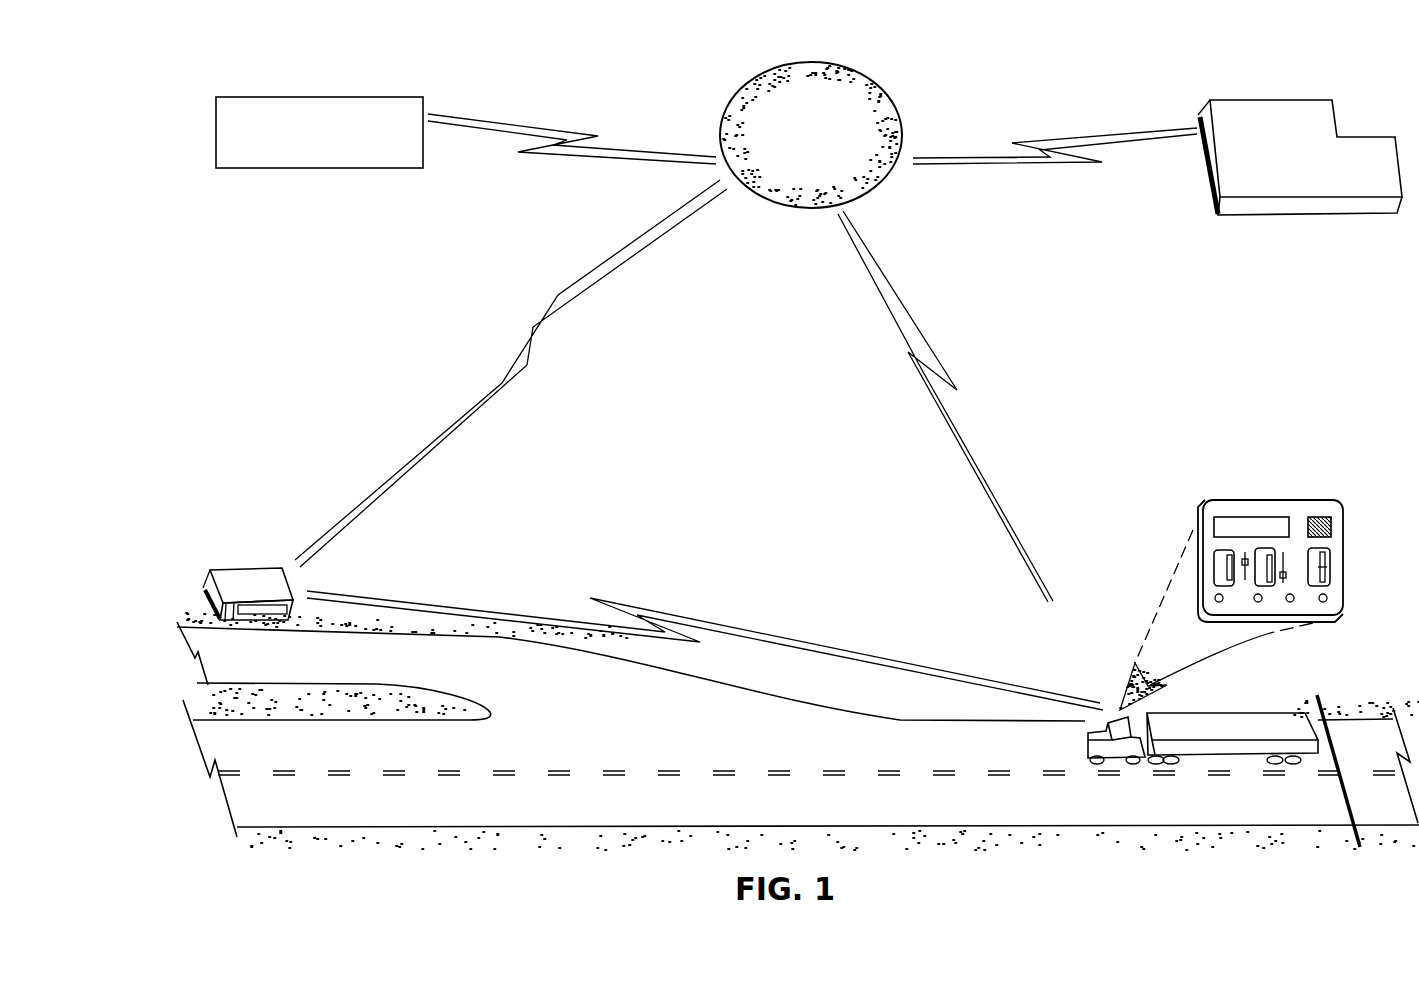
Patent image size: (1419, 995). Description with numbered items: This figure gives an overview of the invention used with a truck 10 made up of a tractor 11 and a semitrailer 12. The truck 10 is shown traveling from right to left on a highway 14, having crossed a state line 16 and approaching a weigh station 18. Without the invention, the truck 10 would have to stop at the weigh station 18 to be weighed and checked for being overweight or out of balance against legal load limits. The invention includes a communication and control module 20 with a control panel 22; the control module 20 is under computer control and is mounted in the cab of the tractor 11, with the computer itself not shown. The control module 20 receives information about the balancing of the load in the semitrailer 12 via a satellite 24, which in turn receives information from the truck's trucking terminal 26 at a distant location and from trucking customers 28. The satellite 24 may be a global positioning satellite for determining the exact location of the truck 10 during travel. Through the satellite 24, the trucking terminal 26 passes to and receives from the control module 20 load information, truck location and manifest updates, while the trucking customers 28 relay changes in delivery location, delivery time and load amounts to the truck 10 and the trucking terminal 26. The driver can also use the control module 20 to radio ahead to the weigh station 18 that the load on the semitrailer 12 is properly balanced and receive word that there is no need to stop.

The truck 10 is at (1198, 731).
The tractor 11 is at (1122, 760).
The semitrailer 12 is at (1227, 748).
The highway 14 is at (1123, 817).
The state line 16 is at (1325, 712).
The weigh station 18 is at (282, 588).
The communication and control module 20 is at (1337, 537).
The control panel 22 is at (1338, 587).
The satellite 24 is at (806, 208).
The trucking terminal 26 is at (1287, 210).
The trucking customers 28 is at (328, 160).